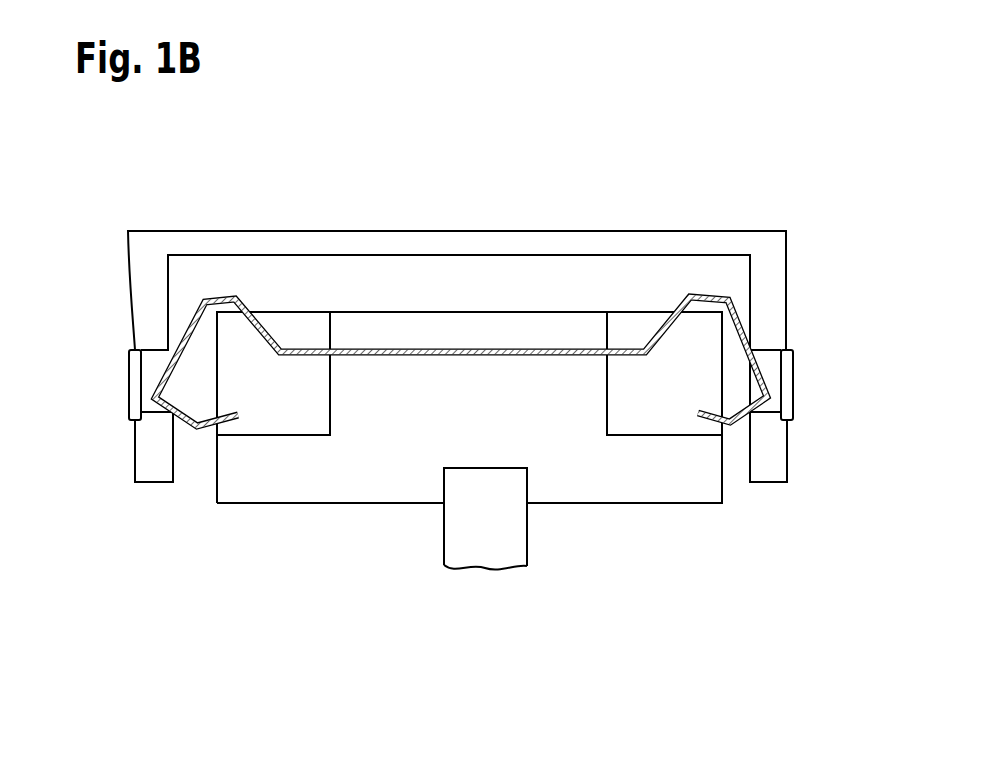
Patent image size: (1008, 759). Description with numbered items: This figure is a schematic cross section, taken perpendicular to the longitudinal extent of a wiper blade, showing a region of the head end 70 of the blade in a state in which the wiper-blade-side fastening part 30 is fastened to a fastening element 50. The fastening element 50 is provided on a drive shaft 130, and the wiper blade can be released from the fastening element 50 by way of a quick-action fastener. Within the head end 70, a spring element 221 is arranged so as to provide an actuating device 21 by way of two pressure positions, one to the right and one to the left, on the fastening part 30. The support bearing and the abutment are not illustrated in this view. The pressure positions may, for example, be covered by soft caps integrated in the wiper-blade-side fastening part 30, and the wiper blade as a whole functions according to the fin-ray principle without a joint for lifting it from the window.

The head end 70 is at (746, 204).
The fastening part 30 is at (778, 275).
The actuating device 21 is at (135, 389).
The fastening element 50 is at (350, 485).
The drive shaft 130 is at (517, 543).
The spring element 221 is at (268, 332).